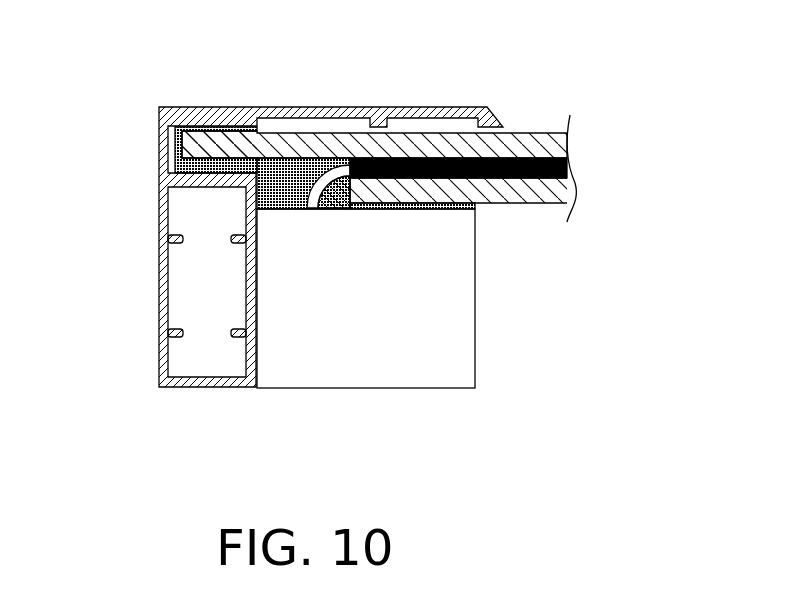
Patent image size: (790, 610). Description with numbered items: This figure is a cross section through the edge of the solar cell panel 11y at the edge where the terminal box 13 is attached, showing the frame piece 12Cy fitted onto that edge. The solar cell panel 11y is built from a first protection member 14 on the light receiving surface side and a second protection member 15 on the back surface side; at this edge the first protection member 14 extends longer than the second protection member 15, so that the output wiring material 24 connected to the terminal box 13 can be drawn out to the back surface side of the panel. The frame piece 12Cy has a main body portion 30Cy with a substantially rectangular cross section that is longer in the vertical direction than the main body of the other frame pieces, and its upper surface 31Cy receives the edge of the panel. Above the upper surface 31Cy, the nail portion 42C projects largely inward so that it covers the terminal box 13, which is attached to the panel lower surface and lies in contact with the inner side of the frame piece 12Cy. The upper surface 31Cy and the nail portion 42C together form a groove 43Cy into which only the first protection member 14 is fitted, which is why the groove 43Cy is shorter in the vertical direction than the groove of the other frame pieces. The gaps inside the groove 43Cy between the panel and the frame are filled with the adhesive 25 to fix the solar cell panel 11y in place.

The solar cell panel 11y is at (411, 134).
The frame piece 12Cy is at (157, 292).
The terminal box 13 is at (382, 377).
The first protection member 14 is at (562, 145).
The second protection member 15 is at (568, 193).
The output wiring material 24 is at (338, 173).
The adhesive 25 is at (302, 167).
The main body portion 30Cy is at (205, 388).
The upper surface 31Cy is at (225, 168).
The nail portion 42C is at (403, 107).
The groove 43Cy is at (253, 165).